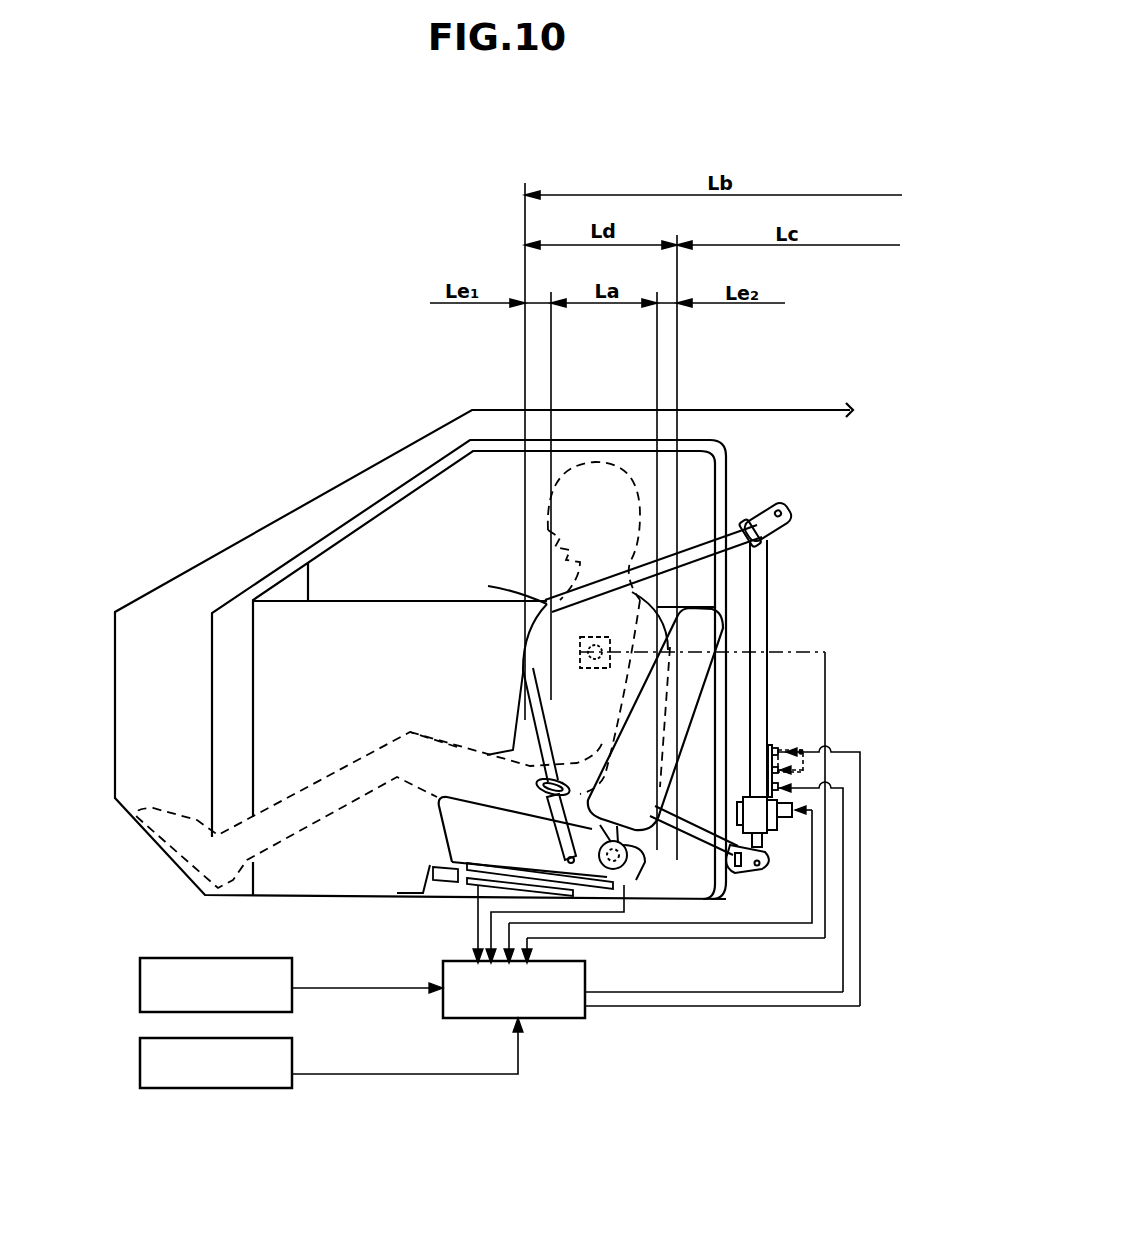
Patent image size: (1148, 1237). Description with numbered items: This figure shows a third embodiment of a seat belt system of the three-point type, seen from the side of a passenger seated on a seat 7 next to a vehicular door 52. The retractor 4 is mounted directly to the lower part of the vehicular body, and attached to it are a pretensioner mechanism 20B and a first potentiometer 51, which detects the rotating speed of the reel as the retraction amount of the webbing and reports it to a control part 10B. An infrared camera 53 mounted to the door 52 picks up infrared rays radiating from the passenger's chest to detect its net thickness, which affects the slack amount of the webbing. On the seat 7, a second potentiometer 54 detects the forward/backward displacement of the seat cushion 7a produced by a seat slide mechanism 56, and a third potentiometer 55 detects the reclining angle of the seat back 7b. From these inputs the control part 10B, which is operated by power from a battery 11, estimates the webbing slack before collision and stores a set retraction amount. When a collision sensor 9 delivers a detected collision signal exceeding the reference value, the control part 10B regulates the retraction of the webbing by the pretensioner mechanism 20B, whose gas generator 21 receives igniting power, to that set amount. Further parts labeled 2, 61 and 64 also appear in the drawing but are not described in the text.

The seat belt 2 is at (770, 864).
The retractor 4 is at (738, 798).
The seat 7 is at (485, 792).
The seat cushion 7a is at (455, 834).
The seat back 7b is at (710, 632).
The collision sensor 9 is at (240, 957).
The control part 10B is at (566, 1022).
The battery 11 is at (240, 1090).
The pretensioner mechanism 20B is at (780, 734).
The gas generator 21 is at (780, 788).
The first potentiometer 51 is at (778, 828).
The vehicular door 52 is at (285, 622).
The infrared camera 53 is at (518, 598).
The second potentiometer 54 is at (428, 900).
The third potentiometer 55 is at (633, 883).
The seat slide mechanism 56 is at (467, 884).
The sensor unit 61 is at (778, 752).
The detector 64 is at (787, 773).